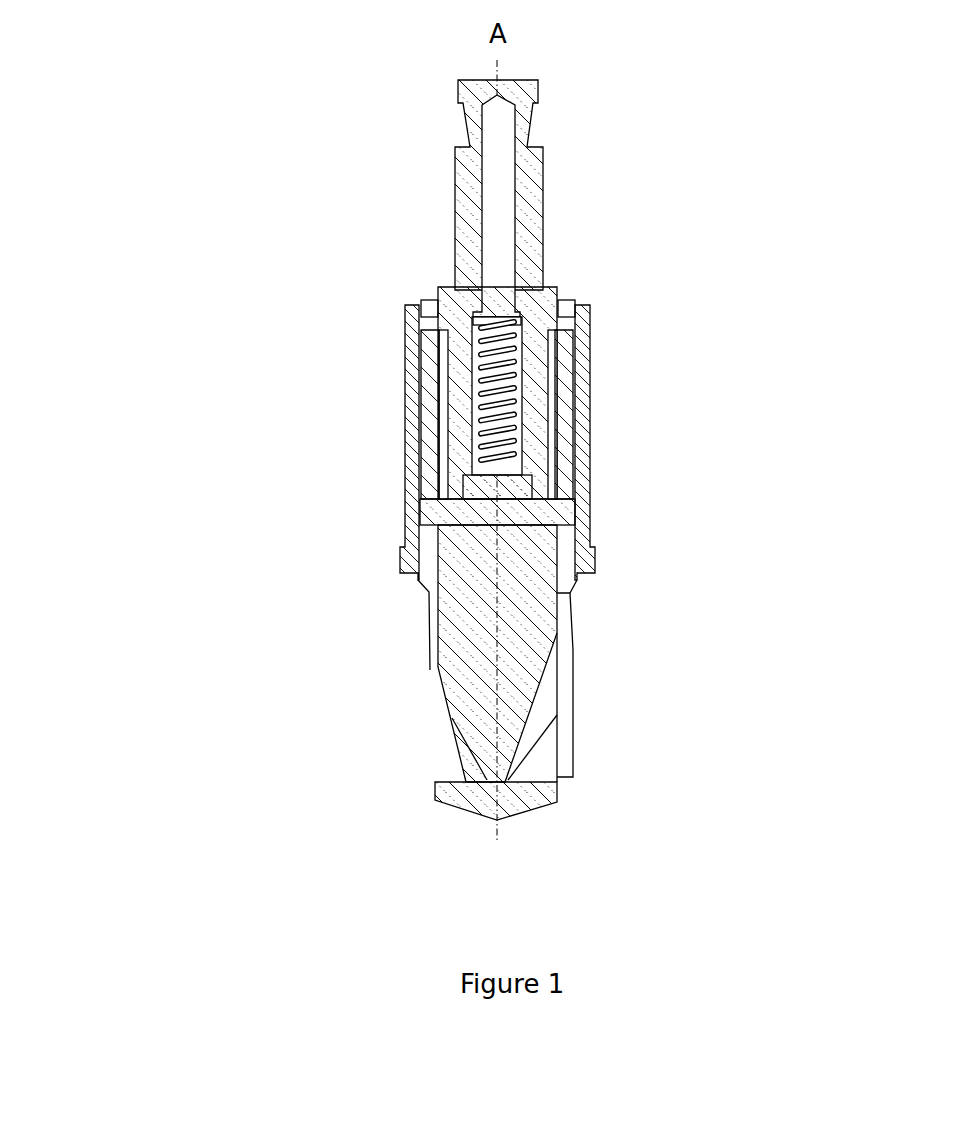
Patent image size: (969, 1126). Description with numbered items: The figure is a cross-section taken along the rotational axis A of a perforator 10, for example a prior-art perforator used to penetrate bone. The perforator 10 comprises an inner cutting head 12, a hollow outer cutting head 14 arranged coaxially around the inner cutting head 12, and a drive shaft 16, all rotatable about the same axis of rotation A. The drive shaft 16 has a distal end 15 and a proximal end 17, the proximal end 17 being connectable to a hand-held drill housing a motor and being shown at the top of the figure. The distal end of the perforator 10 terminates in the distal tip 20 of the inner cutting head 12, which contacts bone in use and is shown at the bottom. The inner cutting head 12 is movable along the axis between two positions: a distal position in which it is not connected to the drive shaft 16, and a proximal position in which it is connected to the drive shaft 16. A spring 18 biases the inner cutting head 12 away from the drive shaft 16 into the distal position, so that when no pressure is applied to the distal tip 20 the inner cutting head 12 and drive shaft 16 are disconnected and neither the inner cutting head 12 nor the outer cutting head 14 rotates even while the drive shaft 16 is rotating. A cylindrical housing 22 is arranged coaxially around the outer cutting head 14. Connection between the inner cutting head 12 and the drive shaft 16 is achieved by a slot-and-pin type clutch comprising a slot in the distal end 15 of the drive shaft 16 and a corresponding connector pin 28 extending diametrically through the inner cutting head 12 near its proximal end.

The perforator 10 is at (208, 143).
The inner cutting head 12 is at (460, 645).
The hollow outer cutting head 14 is at (575, 688).
The distal end of the drive shaft 15 is at (447, 490).
The drive shaft 16 is at (455, 352).
The proximal end of the drive shaft 17 is at (545, 83).
The spring 18 is at (488, 392).
The distal tip 20 is at (460, 818).
The cylindrical housing 22 is at (590, 456).
The connector pin 28 is at (450, 508).